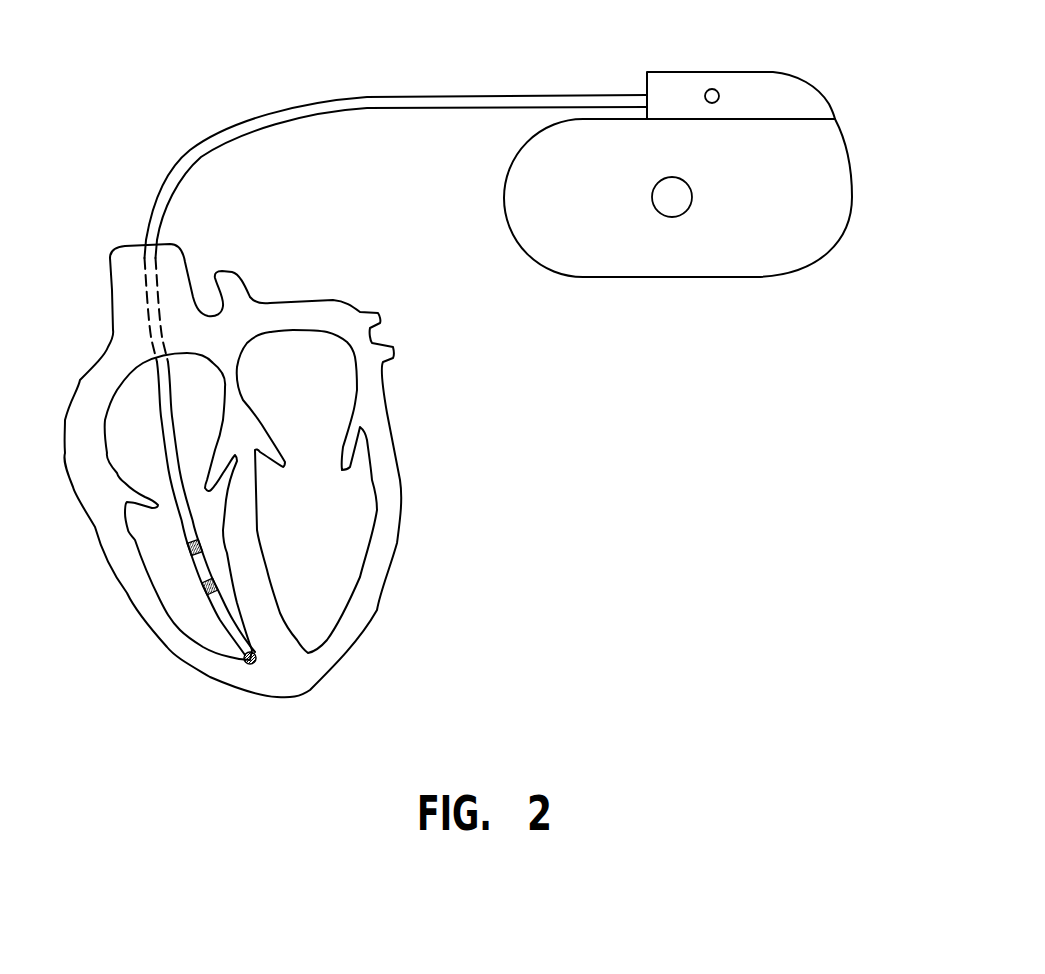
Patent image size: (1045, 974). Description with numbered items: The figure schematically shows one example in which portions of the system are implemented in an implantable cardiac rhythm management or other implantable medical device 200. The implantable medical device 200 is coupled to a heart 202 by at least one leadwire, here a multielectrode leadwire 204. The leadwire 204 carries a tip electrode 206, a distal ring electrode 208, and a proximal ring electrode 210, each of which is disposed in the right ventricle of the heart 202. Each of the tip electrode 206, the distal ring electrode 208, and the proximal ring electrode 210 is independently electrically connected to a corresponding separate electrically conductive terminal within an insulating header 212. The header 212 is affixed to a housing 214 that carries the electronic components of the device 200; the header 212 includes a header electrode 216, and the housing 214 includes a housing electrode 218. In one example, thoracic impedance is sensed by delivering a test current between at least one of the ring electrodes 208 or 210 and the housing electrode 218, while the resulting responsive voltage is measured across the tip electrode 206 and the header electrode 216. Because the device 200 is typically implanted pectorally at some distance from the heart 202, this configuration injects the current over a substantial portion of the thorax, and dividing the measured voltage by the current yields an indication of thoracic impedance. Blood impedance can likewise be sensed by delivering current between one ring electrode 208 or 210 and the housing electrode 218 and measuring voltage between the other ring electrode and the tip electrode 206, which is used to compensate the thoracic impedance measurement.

The implantable medical device 200 is at (477, 388).
The heart 202 is at (394, 570).
The multielectrode leadwire 204 is at (357, 96).
The tip electrode 206 is at (246, 663).
The distal ring electrode 208 is at (204, 590).
The proximal ring electrode 210 is at (190, 552).
The insulating header 212 is at (793, 72).
The housing 214 is at (852, 180).
The header electrode 216 is at (706, 92).
The housing electrode 218 is at (668, 205).